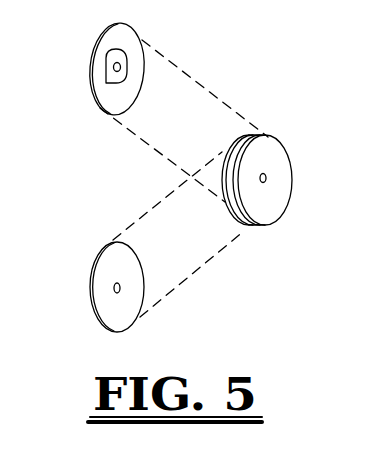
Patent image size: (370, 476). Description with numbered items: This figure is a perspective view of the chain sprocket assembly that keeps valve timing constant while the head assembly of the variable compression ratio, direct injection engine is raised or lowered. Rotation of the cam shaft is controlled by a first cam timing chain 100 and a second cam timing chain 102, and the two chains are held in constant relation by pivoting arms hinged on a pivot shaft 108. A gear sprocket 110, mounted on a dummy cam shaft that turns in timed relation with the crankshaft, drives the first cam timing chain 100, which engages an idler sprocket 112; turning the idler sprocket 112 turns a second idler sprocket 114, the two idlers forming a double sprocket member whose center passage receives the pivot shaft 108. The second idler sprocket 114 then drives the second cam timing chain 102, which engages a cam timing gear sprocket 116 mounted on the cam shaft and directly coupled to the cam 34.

The cam 34 is at (106, 72).
The first cam timing chain 100 is at (187, 275).
The second cam timing chain 102 is at (211, 91).
The pivot shaft 108 is at (267, 179).
The gear sprocket 110 is at (91, 297).
The idler sprocket 112 is at (225, 162).
The second idler sprocket 114 is at (282, 157).
The cam timing gear sprocket 116 is at (93, 38).